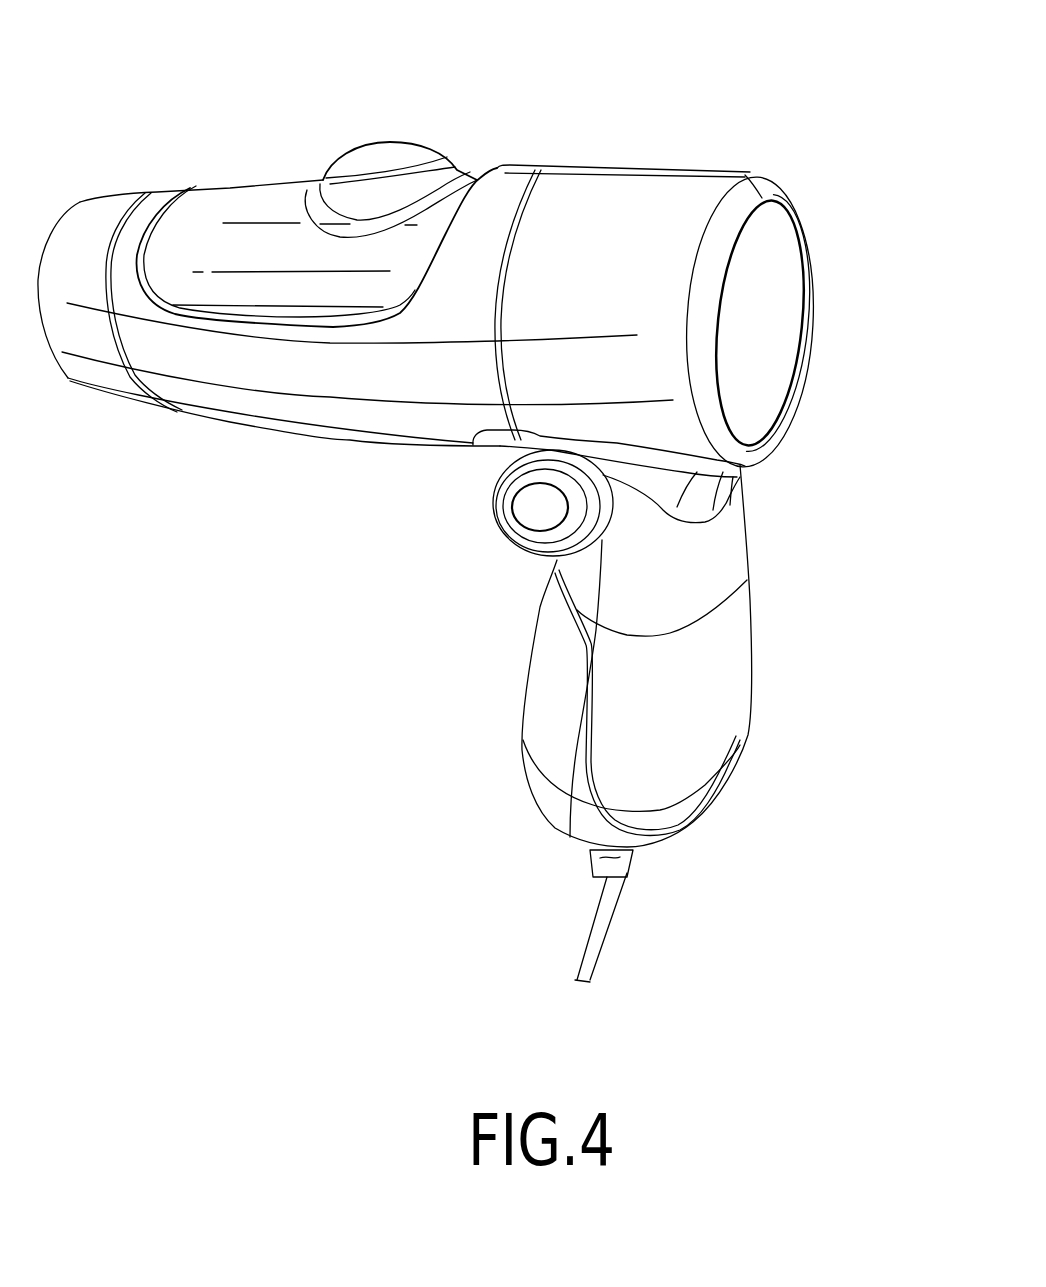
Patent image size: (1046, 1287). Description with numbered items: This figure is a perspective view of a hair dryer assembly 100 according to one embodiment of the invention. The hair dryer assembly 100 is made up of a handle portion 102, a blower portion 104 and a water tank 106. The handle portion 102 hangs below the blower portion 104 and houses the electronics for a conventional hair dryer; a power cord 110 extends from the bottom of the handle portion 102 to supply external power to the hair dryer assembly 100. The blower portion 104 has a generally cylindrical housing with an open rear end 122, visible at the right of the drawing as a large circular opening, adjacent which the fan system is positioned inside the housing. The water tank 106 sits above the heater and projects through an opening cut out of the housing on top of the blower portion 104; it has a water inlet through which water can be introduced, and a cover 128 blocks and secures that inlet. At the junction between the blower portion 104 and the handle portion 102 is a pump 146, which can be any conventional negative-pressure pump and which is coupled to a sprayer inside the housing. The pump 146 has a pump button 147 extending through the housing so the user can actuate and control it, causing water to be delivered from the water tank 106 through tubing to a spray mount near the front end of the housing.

The hair dryer assembly 100 is at (964, 580).
The handle portion 102 is at (668, 722).
The blower portion 104 is at (617, 218).
The water tank 106 is at (272, 233).
The power cord 110 is at (595, 947).
The rear end 122 is at (764, 285).
The cover 128 is at (452, 128).
The pump 146 is at (539, 548).
The pump button 147 is at (540, 507).